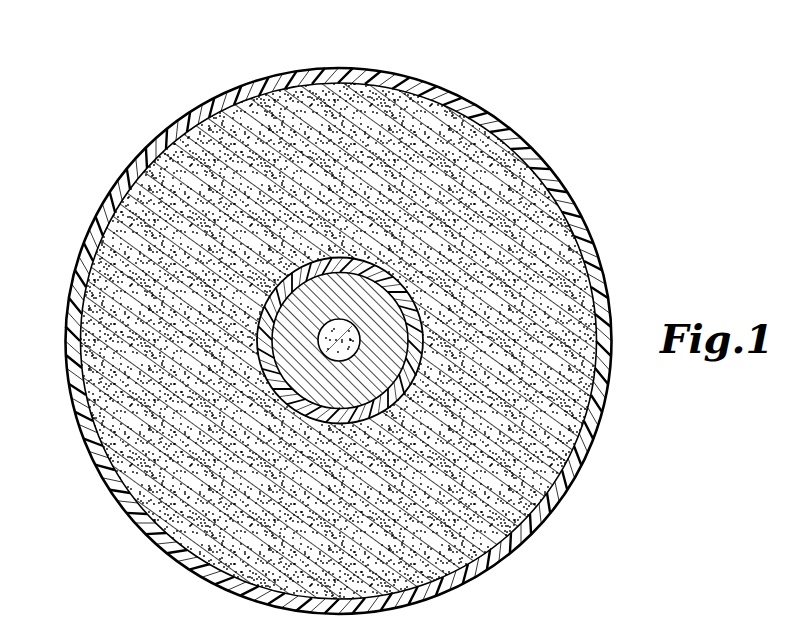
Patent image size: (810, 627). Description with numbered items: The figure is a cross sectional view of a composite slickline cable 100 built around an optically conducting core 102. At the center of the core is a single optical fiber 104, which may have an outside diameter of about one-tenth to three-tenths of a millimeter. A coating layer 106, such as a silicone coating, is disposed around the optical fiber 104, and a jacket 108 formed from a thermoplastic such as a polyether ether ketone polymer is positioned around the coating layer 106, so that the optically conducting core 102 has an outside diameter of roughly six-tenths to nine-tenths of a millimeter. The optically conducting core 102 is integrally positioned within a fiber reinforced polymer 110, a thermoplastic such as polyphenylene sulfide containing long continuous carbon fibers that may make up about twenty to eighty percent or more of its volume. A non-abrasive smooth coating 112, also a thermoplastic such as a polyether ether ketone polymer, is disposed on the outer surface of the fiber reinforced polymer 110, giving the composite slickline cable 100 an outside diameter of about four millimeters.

The composite slickline cable 100 is at (488, 82).
The optically conducting core 102 is at (413, 393).
The optical fiber 104 is at (350, 337).
The coating layer 106 is at (347, 268).
The jacket 108 is at (273, 280).
The fiber reinforced polymer 110 is at (460, 559).
The non-abrasive smooth coating 112 is at (552, 502).